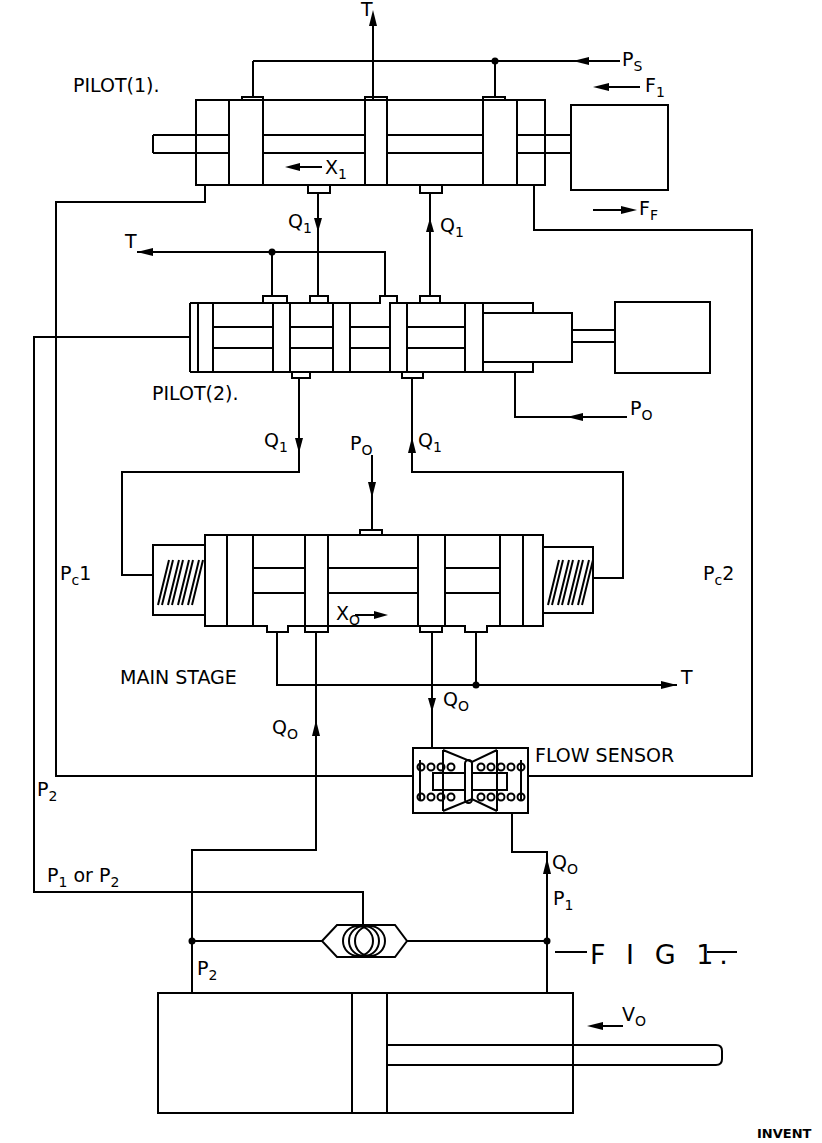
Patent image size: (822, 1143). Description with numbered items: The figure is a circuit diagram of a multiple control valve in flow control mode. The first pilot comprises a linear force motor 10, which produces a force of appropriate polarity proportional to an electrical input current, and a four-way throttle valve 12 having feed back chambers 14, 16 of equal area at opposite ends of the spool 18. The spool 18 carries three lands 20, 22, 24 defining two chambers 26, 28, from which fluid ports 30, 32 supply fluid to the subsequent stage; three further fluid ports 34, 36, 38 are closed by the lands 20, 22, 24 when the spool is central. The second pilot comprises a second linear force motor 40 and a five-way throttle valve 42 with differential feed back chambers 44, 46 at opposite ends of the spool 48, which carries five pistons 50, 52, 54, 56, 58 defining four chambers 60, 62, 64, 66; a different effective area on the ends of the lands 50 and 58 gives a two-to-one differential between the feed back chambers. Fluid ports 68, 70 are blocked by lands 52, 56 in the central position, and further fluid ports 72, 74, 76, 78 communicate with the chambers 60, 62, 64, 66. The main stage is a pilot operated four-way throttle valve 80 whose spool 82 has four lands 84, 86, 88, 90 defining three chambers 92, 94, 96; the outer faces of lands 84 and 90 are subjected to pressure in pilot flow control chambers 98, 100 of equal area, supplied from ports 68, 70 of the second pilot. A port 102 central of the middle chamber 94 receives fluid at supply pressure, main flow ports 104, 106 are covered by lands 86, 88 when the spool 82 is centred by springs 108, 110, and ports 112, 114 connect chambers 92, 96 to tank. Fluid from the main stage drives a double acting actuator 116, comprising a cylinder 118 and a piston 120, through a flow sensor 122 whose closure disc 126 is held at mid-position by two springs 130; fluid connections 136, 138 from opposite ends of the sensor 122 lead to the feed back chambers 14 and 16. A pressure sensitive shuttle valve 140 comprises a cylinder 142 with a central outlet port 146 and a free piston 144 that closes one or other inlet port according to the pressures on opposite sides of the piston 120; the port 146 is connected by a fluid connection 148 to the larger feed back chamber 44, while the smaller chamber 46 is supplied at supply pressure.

The linear force motor 10 is at (670, 119).
The 4-way throttle valve 12 is at (186, 168).
The feed back chamber 14 is at (203, 128).
The feed back chamber 16 is at (541, 110).
The spool 18 is at (396, 135).
The land 20 is at (235, 179).
The land 22 is at (390, 182).
The land 24 is at (485, 182).
The chamber 26 is at (305, 128).
The chamber 28 is at (428, 128).
The fluid port 30 is at (329, 193).
The fluid port 32 is at (441, 193).
The fluid port 34 is at (250, 96).
The fluid port 36 is at (386, 99).
The fluid port 38 is at (500, 98).
The second linear force motor 40 is at (692, 302).
The 5-way throttle valve 42 is at (180, 360).
The differential feed back chamber 44 is at (195, 308).
The differential feed back chamber 46 is at (522, 308).
The spool 48 is at (360, 323).
The piston 50 is at (208, 303).
The piston 52 is at (283, 363).
The piston 54 is at (342, 360).
The piston 56 is at (400, 358).
The piston 58 is at (473, 363).
The chamber 60 is at (238, 326).
The chamber 62 is at (302, 326).
The chamber 64 is at (371, 365).
The chamber 66 is at (423, 326).
The fluid port 68 is at (305, 378).
The fluid port 70 is at (415, 378).
The fluid port 72 is at (266, 297).
The fluid port 74 is at (322, 298).
The fluid port 76 is at (393, 300).
The fluid port 78 is at (437, 298).
The pilot operated 4-way throttle valve 80 is at (464, 527).
The spool 82 is at (403, 580).
The land 84 is at (245, 540).
The land 86 is at (322, 545).
The land 88 is at (432, 540).
The land 90 is at (507, 622).
The chamber 92 is at (268, 559).
The chamber 94 is at (350, 559).
The chamber 96 is at (452, 559).
The pilot flow control chamber 98 is at (202, 549).
The pilot flow control chamber 100 is at (556, 548).
The port 102 is at (368, 528).
The main flow port 104 is at (322, 633).
The main flow port 106 is at (433, 633).
The spring 108 is at (175, 597).
The spring 110 is at (573, 600).
The port 112 is at (270, 632).
The port 114 is at (478, 636).
The double acting actuator 116 is at (150, 1007).
The cylinder 118 is at (243, 995).
The piston 120 is at (377, 1022).
The flow sensor device 122 is at (527, 748).
The closure disc 126 is at (470, 811).
The spring 130 is at (440, 765).
The fluid connection 136 is at (205, 777).
The fluid connection 138 is at (710, 778).
The pressure sensitive shuttle valve 140 is at (410, 934).
The cylinder 142 is at (373, 925).
The free piston 144 is at (367, 948).
The central outlet port 146 is at (360, 925).
The fluid connection 148 is at (135, 893).